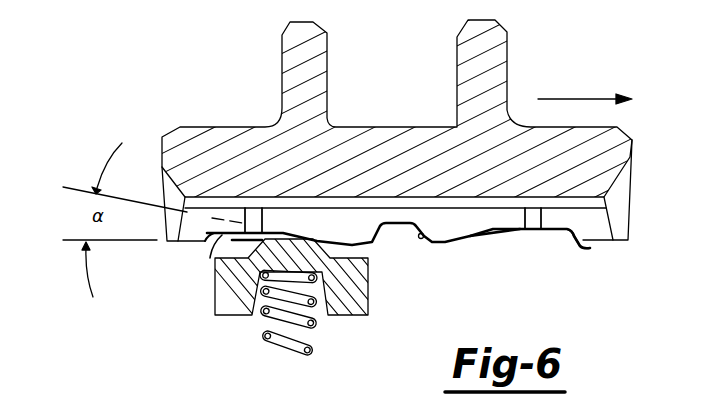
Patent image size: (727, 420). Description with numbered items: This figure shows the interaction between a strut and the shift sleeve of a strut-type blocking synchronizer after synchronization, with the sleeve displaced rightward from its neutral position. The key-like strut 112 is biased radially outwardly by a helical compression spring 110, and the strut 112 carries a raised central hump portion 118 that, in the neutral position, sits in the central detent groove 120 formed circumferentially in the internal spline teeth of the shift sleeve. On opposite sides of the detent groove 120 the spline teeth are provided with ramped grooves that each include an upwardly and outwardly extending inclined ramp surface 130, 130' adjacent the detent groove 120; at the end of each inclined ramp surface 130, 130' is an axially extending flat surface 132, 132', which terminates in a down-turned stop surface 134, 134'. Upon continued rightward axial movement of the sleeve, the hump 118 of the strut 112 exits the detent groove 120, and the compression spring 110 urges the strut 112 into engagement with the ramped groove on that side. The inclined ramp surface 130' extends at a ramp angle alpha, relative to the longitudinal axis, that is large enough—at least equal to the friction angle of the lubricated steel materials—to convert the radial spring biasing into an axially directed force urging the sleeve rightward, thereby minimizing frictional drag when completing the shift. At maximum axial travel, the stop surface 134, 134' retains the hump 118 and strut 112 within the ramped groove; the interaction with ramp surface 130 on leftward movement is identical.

The helical compression spring 110 is at (313, 350).
The strut 112 is at (363, 283).
The hump portion 118 is at (315, 246).
The detent groove 120 is at (423, 235).
The inclined ramp surface 130 is at (500, 261).
The inclined ramp surface 130' is at (292, 220).
The axially extending flat surface 132 is at (548, 242).
The axially extending flat surface 132' is at (202, 300).
The stop surface 134 is at (607, 249).
The stop surface 134' is at (181, 267).